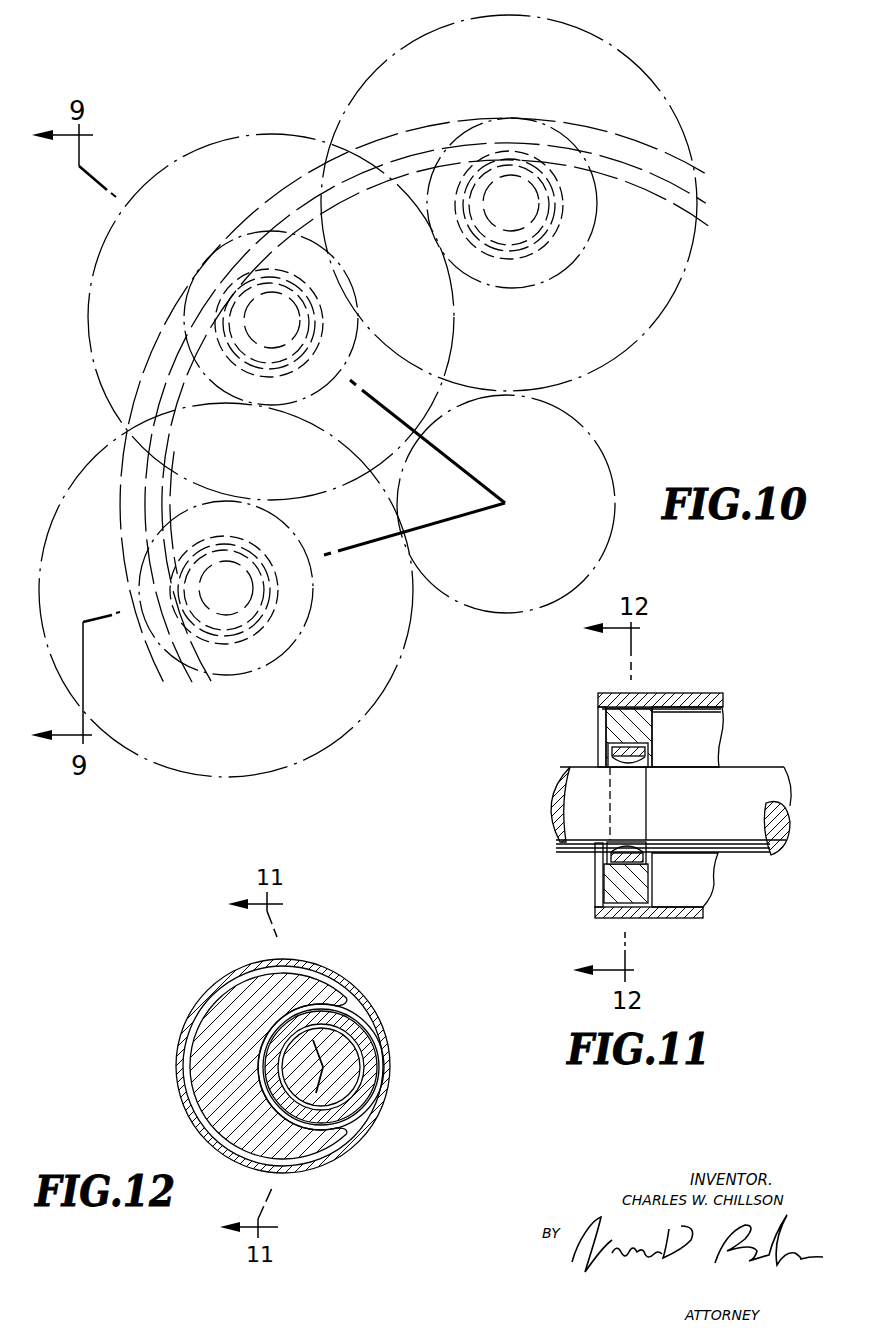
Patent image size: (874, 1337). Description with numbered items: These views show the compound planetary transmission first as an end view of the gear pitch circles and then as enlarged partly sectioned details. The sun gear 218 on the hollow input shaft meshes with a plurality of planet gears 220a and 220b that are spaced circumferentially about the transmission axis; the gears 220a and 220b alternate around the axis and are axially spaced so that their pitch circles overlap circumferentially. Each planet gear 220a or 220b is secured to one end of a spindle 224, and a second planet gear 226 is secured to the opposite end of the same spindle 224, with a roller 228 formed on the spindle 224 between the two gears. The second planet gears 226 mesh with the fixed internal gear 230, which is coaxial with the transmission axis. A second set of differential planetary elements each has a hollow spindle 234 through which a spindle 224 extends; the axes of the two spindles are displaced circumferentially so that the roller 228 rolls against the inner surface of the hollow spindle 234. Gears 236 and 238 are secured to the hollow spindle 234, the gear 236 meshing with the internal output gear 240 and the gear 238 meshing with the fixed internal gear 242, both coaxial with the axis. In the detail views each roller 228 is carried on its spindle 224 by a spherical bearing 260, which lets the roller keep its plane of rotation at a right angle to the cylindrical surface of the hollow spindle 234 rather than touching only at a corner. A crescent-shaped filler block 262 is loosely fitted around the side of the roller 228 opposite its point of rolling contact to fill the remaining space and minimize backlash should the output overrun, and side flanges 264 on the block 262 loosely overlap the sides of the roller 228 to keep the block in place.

In FIG. 10, the sun gear 218 is at (613, 492).
In FIG. 10, the planet gear 220a is at (208, 141).
In FIG. 10, the planet gear 220b is at (373, 77).
In FIG. 11, the spindle 224 is at (802, 781).
In FIG. 12, the spindle 224 is at (347, 1080).
In FIG. 10, the second planet gear 226 is at (330, 299).
In FIG. 10, the roller 228 is at (305, 286).
In FIG. 11, the roller 228 is at (623, 738).
In FIG. 12, the roller 228 is at (372, 1116).
In FIG. 10, the fixed internal gear 230 is at (261, 209).
In FIG. 10, the hollow spindle 234 is at (222, 400).
In FIG. 11, the hollow spindle 234 is at (686, 919).
In FIG. 12, the hollow spindle 234 is at (228, 975).
In FIG. 10, the planetary gear 236 is at (271, 402).
In FIG. 10, the gear 238 is at (237, 232).
In FIG. 10, the internal output gear 240 is at (278, 206).
In FIG. 10, the fixed internal gear 242 is at (302, 172).
In FIG. 11, the spherical bearing 260 is at (650, 775).
In FIG. 12, the spherical bearing 260 is at (376, 1058).
In FIG. 11, the crescent-shaped filler block 262 is at (598, 705).
In FIG. 12, the crescent-shaped filler block 262 is at (183, 1081).
In FIG. 11, the side flange 264 is at (605, 745).